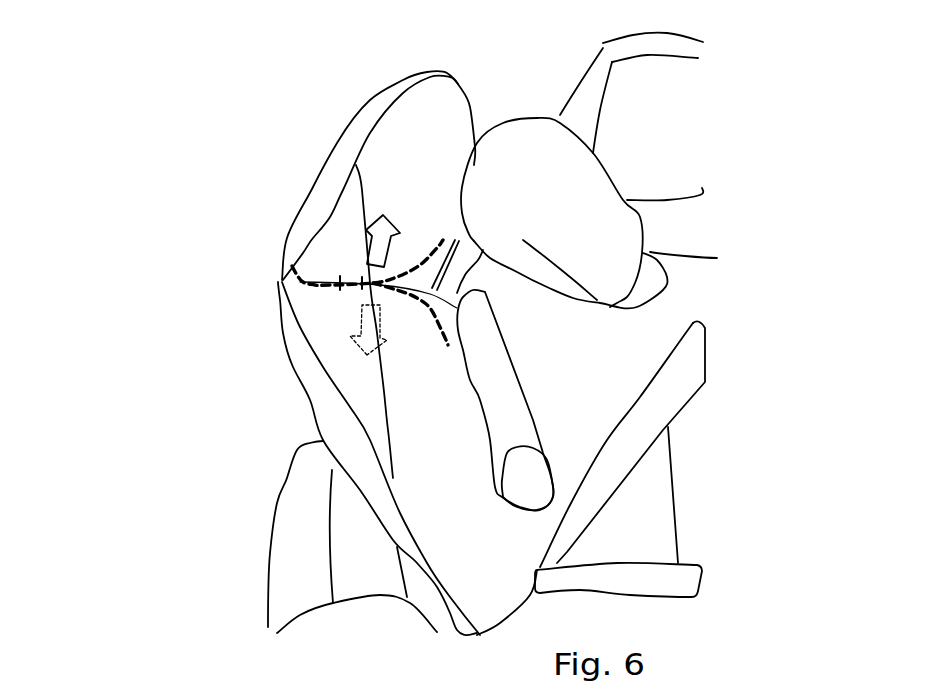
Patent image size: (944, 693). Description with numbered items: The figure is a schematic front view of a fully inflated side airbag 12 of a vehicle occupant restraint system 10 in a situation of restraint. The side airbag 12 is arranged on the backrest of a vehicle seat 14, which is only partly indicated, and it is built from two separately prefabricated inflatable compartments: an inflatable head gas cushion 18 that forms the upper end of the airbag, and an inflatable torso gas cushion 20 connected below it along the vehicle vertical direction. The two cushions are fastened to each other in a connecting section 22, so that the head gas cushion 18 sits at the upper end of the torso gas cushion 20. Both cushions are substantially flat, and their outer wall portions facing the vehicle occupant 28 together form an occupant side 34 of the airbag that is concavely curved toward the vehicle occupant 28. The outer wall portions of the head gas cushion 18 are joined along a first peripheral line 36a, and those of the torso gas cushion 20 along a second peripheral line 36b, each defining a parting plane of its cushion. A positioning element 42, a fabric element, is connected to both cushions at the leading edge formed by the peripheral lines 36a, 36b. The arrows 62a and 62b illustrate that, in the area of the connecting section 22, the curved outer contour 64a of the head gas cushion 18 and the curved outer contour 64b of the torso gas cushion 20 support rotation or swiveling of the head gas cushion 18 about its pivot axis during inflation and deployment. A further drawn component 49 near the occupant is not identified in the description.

The vehicle occupant restraint system 10 is at (150, 150).
The side airbag 12 is at (380, 82).
The vehicle seat 14 is at (655, 57).
The head gas cushion 18 is at (318, 210).
The torso gas cushion 20 is at (297, 335).
The connecting section 22 is at (350, 287).
The vehicle occupant 28 is at (688, 287).
The occupant side 34 is at (478, 382).
The first peripheral line 36a is at (422, 88).
The second peripheral line 36b is at (400, 502).
The positioning element 42 is at (323, 258).
The belt tongue and buckle 49 is at (652, 418).
The arrow 62a is at (364, 226).
The arrow 62b is at (348, 341).
The curved outer contour of the head gas cushion 64a is at (430, 248).
The curved outer contour of the torso gas cushion 64b is at (360, 362).